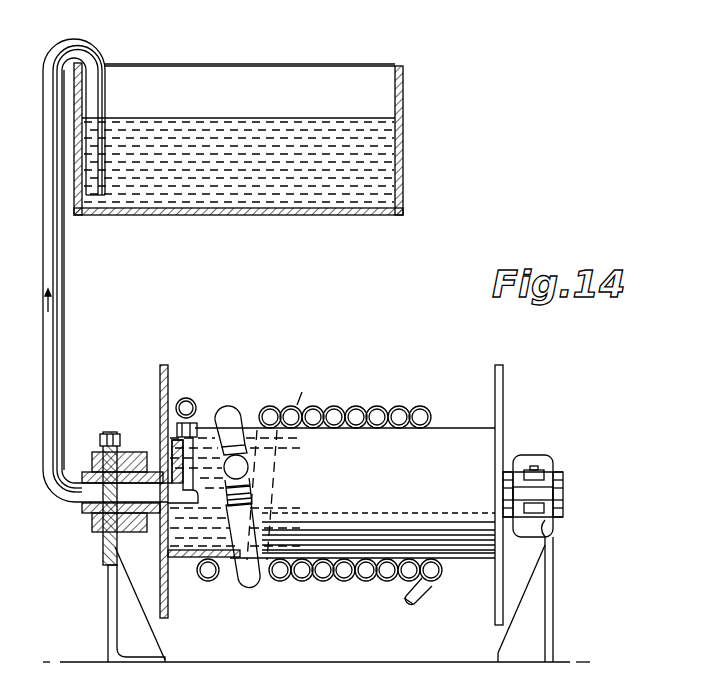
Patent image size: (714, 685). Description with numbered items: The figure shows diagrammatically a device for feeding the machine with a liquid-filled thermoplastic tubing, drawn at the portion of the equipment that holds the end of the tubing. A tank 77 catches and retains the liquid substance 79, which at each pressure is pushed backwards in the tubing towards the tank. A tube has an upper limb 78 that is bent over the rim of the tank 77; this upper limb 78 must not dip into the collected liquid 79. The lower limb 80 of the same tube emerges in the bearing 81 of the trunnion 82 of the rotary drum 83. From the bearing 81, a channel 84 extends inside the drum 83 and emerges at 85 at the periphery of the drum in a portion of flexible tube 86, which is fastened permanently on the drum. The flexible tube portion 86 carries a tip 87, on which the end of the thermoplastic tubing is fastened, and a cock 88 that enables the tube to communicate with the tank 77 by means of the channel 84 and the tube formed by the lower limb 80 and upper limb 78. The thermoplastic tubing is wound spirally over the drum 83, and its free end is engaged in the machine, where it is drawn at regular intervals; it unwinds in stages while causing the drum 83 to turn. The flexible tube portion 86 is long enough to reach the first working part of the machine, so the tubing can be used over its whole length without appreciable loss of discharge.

The tank 77 is at (277, 65).
The upper limb of the tube 78 is at (100, 50).
The liquid substance 79 is at (385, 172).
The lower limb of the tube 80 is at (45, 268).
The bearing 81 is at (95, 522).
The trunnion 82 is at (158, 522).
The rotary drum 83 is at (452, 440).
The channel 84 is at (124, 457).
The channel outlet at drum periphery 85 is at (195, 408).
The flexible tube portion 86 is at (232, 413).
The tip 87 is at (252, 497).
The cock 88 is at (249, 465).